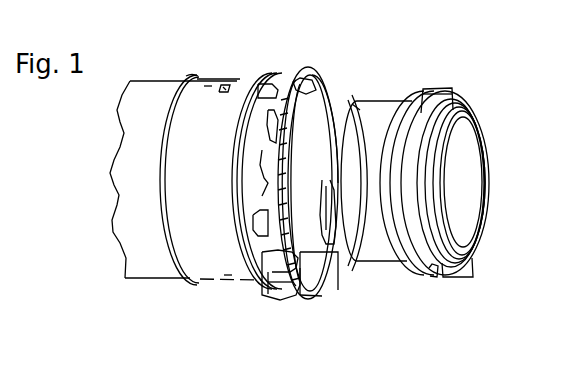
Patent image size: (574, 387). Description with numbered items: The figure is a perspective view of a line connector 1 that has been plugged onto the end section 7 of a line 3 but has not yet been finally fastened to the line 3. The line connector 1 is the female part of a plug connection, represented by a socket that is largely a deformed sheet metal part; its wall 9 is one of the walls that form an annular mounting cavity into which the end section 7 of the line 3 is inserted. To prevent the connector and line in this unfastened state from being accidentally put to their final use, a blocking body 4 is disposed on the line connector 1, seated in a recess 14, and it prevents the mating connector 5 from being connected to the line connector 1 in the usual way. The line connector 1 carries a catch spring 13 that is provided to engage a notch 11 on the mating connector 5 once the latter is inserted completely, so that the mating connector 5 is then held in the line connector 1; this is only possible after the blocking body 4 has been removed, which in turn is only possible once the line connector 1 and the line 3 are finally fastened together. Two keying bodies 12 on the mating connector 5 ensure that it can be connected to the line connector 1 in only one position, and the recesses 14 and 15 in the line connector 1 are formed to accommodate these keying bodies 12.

The line connector 1 is at (240, 90).
The line 3 is at (150, 98).
The blocking body 4 is at (312, 292).
The mating connector 5 is at (410, 100).
The end section 7 is at (170, 262).
The wall 9 is at (215, 260).
The notch 11 is at (430, 276).
The keying bodies 12 is at (450, 90).
The catch spring 13 is at (250, 270).
The recess 14 is at (332, 284).
The recess 15 is at (353, 105).